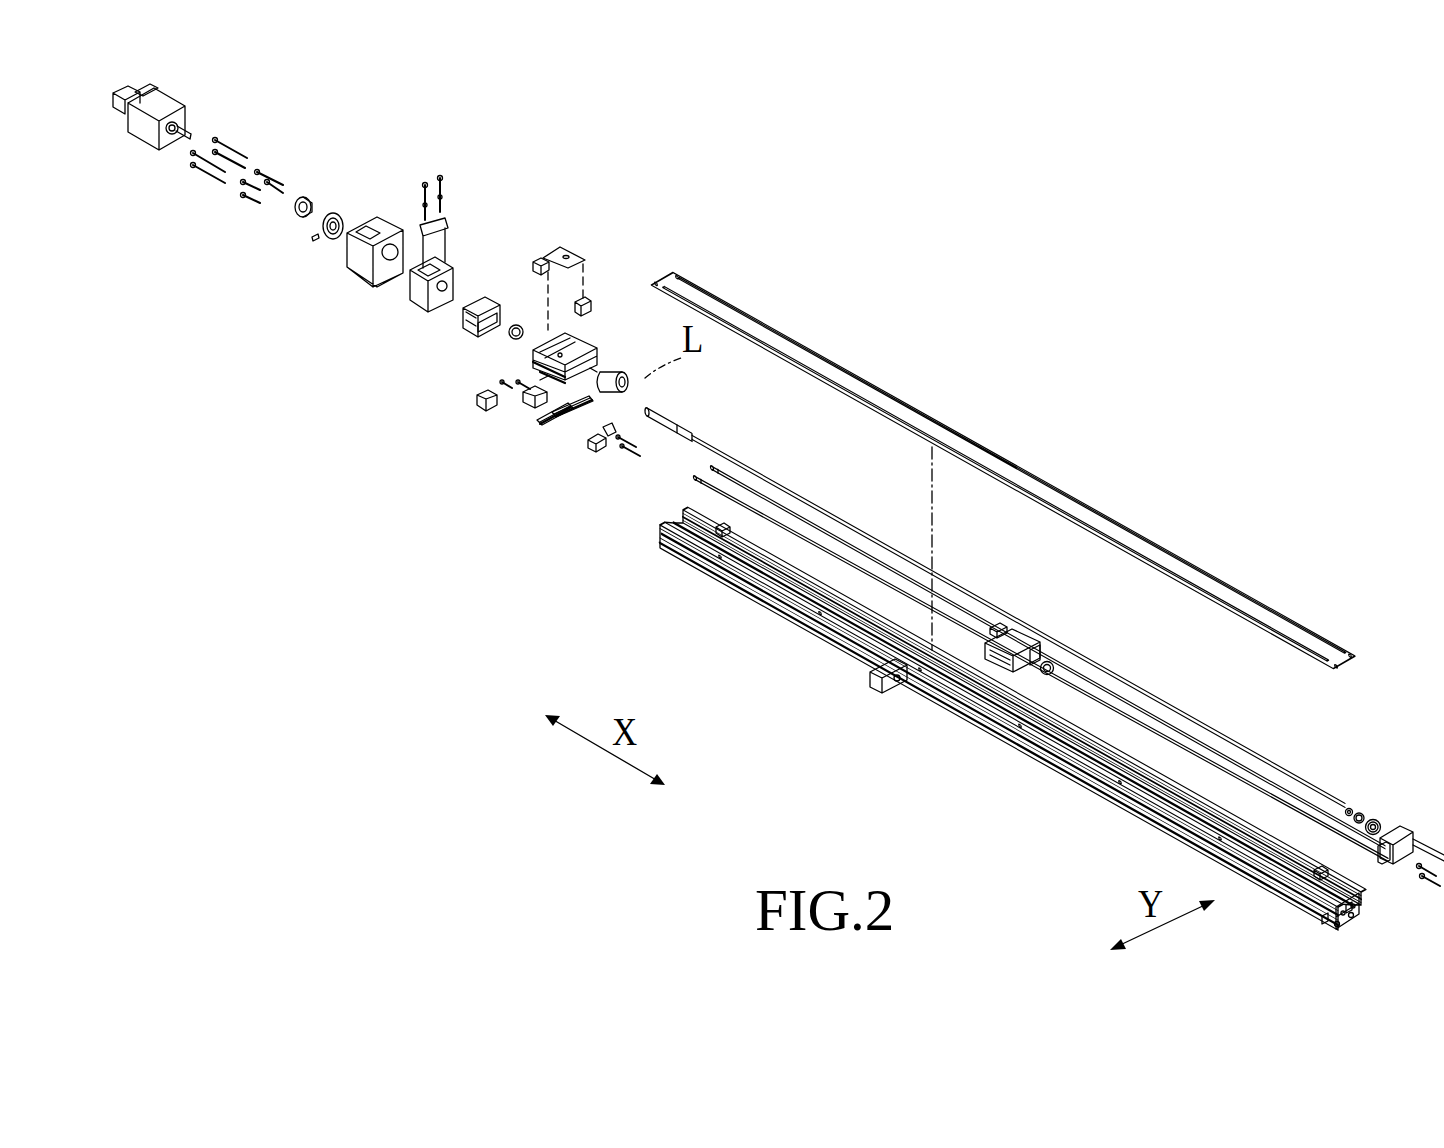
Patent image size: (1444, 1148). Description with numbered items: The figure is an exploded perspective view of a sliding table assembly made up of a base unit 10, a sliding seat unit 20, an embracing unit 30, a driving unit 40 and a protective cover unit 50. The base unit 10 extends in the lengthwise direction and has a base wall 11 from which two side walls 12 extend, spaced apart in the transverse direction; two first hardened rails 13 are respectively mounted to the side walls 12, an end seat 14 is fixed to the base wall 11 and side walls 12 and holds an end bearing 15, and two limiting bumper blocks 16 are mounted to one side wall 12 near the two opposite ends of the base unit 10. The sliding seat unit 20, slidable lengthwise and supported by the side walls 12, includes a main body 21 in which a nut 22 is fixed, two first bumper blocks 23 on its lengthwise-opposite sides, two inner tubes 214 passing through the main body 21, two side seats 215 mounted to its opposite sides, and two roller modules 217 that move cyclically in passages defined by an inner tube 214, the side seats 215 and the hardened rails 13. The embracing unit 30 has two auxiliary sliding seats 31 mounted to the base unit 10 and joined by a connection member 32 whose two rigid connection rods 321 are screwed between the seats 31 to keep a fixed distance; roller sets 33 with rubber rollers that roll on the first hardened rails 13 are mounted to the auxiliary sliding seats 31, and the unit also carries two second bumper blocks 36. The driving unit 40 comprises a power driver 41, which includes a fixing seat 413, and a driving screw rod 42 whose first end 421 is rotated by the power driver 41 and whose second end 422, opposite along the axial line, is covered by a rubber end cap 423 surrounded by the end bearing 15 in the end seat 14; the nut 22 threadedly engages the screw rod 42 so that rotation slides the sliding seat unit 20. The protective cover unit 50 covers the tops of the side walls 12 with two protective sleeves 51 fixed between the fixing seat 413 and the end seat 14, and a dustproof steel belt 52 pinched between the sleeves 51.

The base unit 10 is at (1010, 763).
The base wall 11 is at (1345, 900).
The side walls 12 is at (1352, 908).
The first hardened rails 13 is at (1353, 915).
The end seat 14 is at (1402, 842).
The end bearing 15 is at (1378, 820).
The limiting bumper blocks 16 is at (720, 530).
The sliding seat unit 20 is at (630, 284).
The main body 21 is at (600, 345).
The nut 22 is at (620, 378).
The first bumper blocks 23 is at (545, 270).
The embracing unit 30 is at (399, 347).
The auxiliary sliding seats 31 is at (1023, 650).
The connection member 32 is at (1041, 628).
The rigid connection rods 321 is at (737, 480).
The roller sets 33 is at (470, 325).
The second bumper blocks 36 is at (537, 262).
The driving unit 40 is at (258, 161).
The power driver 41 is at (190, 100).
The driving screw rod 42 is at (995, 582).
The first end 421 is at (668, 424).
The second end 422 is at (1349, 808).
The end cap 423 is at (1364, 812).
The fixing seat 413 is at (440, 262).
The protective cover unit 50 is at (1003, 470).
The protective sleeves 51 is at (955, 423).
The dustproof steel belt 52 is at (1195, 578).
The inner tubes 214 is at (567, 432).
The side seats 215 is at (588, 445).
The roller modules 217 is at (555, 428).